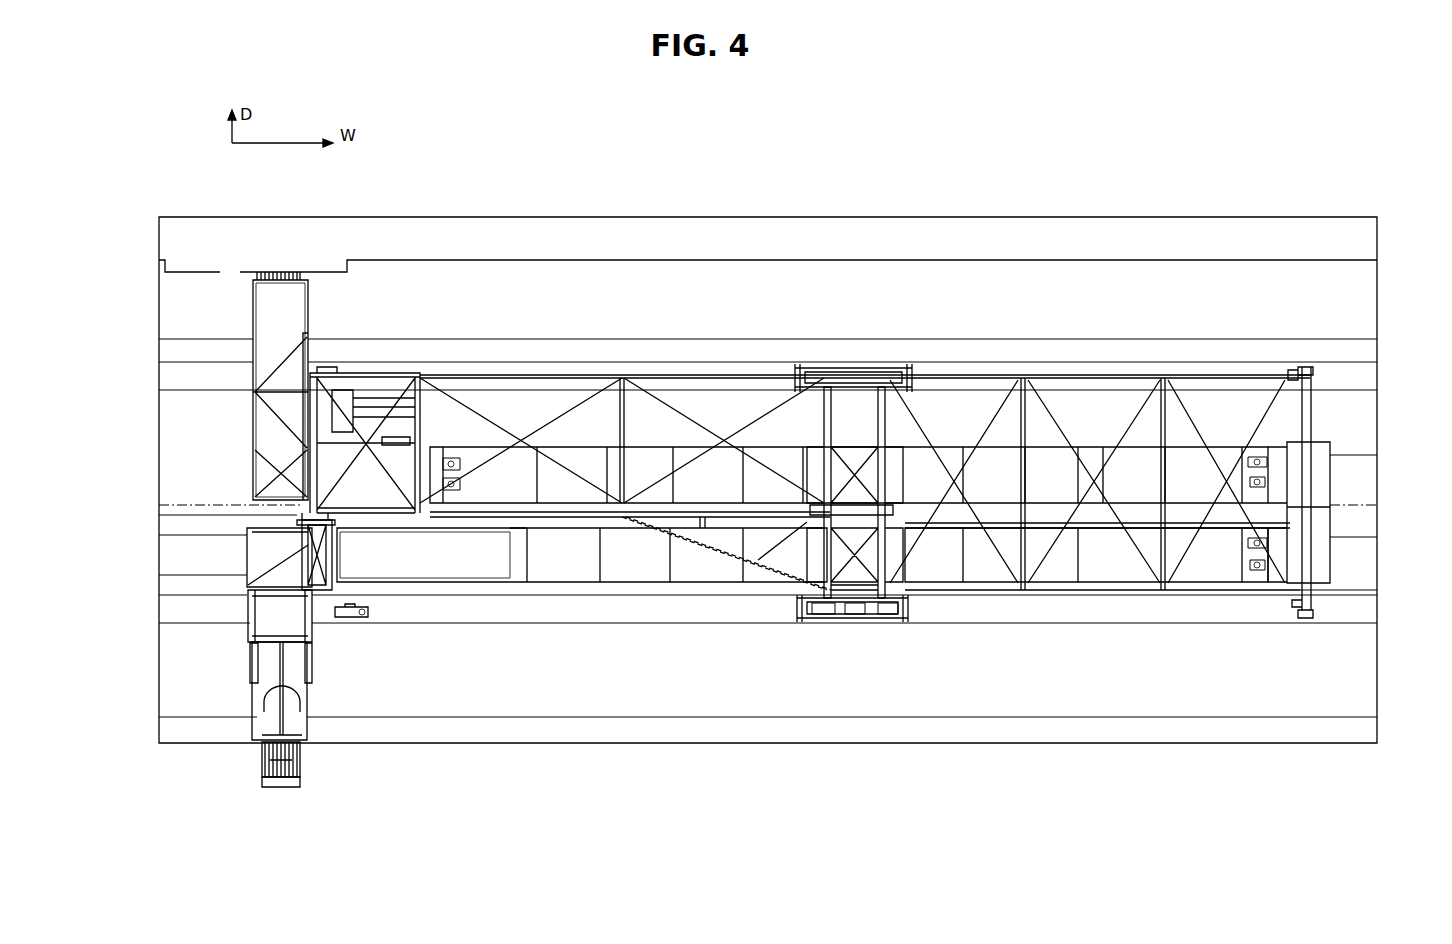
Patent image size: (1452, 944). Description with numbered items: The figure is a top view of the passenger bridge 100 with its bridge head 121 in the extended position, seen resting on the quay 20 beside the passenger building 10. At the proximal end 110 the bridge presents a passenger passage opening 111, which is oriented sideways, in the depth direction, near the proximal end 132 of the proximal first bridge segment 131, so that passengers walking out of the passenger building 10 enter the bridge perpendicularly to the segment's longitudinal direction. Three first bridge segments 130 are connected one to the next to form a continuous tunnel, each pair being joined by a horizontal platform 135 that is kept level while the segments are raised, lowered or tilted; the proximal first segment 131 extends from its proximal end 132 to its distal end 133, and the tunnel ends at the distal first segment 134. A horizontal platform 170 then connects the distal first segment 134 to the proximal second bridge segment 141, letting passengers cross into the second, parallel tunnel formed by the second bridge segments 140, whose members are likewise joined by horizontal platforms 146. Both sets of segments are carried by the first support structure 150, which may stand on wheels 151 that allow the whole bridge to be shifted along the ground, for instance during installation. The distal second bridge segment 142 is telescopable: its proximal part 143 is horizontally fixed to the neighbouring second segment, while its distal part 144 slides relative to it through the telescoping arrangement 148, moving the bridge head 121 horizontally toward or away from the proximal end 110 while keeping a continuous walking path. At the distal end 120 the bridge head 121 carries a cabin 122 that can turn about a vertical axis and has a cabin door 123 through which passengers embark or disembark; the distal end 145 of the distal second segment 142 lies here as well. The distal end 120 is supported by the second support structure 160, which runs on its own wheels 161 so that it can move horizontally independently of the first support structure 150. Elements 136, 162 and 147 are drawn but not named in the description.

The passenger bridge 100 is at (185, 225).
The passenger building 10 is at (200, 236).
The quay 20 is at (202, 700).
The proximal end 110 is at (228, 325).
The passenger passage opening 111 is at (275, 297).
The proximal end of proximal first segment 132 is at (258, 275).
The first bridge segment 130 is at (565, 447).
The proximal first bridge segment 131 is at (368, 447).
The distal end of proximal first segment 133 is at (398, 470).
The distal first bridge segment 134 is at (1005, 420).
The horizontal platform of first set 135 is at (866, 372).
The trolley upper carriage 136 is at (858, 432).
The first support structure 150 is at (1118, 430).
The horizontal platform 170 is at (1335, 455).
The connecting bracket 162 is at (300, 520).
The distal end 120 is at (212, 560).
The distal end of distal second segment 145 is at (253, 585).
The bridge head 121 is at (252, 677).
The cabin 122 is at (262, 758).
The cabin door 123 is at (262, 785).
The second support structure 160 is at (340, 600).
The wheels 161 is at (355, 625).
The distal part 144 is at (432, 572).
The second bridge segment 140 is at (582, 555).
The distal second bridge segment 142 is at (532, 585).
The telescoping arrangement 148 is at (573, 577).
The proximal part 143 is at (785, 590).
The horizontal platform of second set 146 is at (860, 592).
The lower rollers 147 is at (827, 592).
The wheels 151 is at (1295, 603).
The proximal second bridge segment 141 is at (1130, 583).